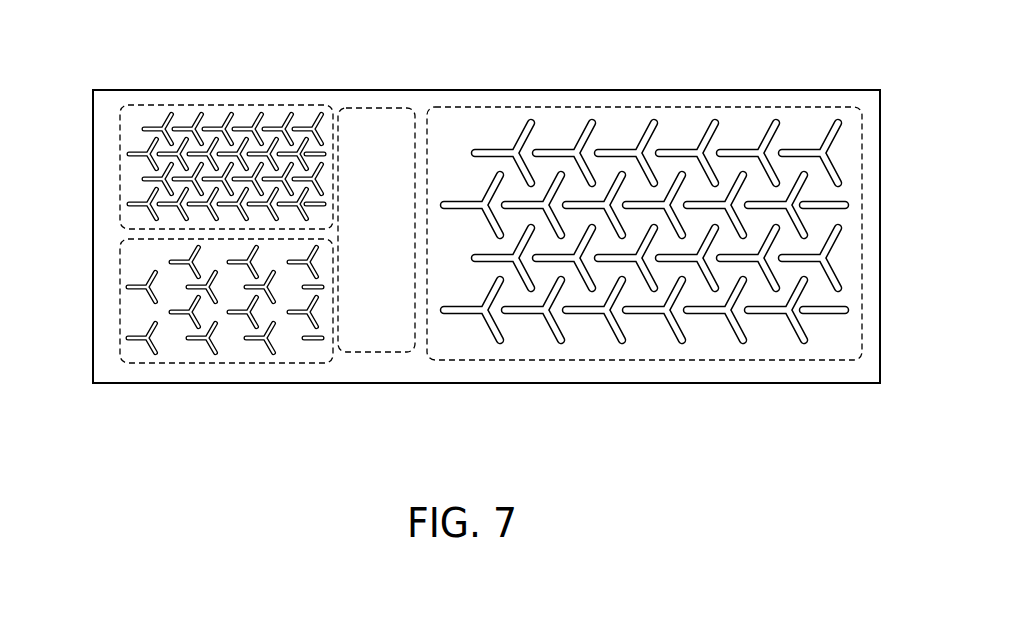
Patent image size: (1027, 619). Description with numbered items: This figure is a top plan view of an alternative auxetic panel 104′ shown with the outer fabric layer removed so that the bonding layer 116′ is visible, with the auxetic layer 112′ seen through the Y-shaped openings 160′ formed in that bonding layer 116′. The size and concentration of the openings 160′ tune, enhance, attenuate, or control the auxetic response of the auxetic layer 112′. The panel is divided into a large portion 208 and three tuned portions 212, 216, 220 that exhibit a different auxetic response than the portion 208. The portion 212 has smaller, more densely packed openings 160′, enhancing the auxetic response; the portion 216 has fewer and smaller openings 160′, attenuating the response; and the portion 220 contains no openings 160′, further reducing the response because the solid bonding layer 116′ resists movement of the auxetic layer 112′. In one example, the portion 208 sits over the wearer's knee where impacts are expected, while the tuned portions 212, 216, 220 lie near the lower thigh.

The auxetic panel 104′ is at (765, 70).
The auxetic layer 112′ is at (580, 138).
The bonding layer 116′ is at (842, 153).
The openings 160′ is at (138, 152).
The portion 208 is at (688, 107).
The tuned portion 212 is at (241, 105).
The tuned portion 216 is at (230, 363).
The tuned portion 220 is at (375, 108).